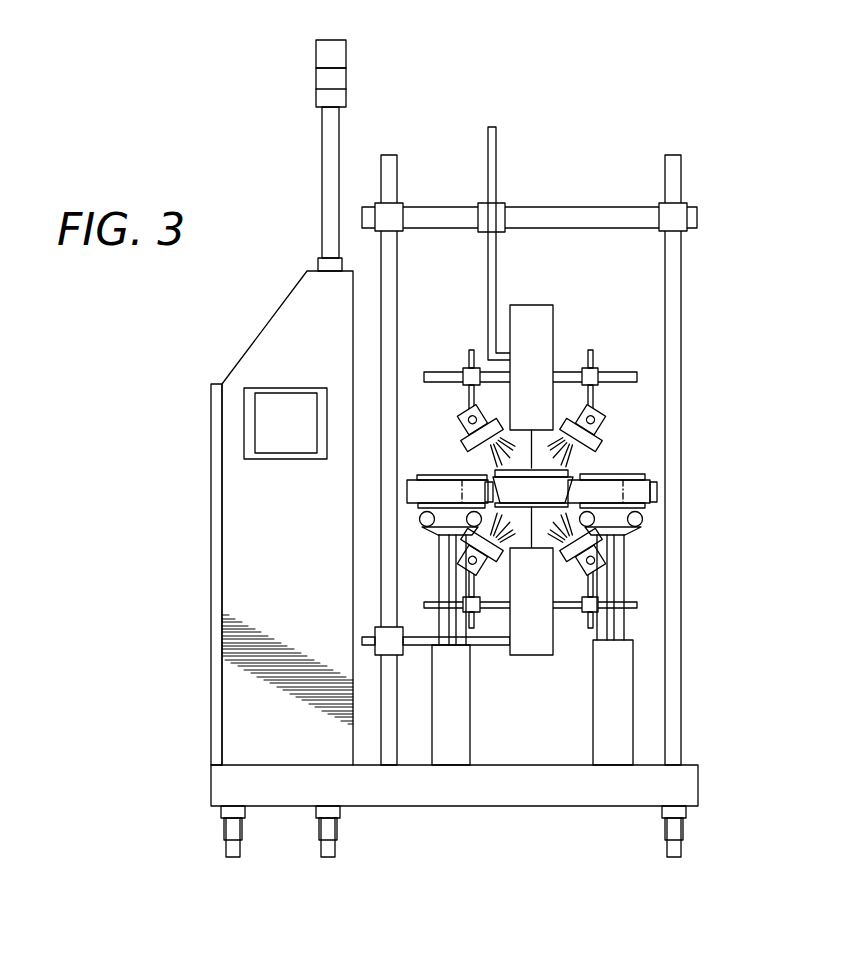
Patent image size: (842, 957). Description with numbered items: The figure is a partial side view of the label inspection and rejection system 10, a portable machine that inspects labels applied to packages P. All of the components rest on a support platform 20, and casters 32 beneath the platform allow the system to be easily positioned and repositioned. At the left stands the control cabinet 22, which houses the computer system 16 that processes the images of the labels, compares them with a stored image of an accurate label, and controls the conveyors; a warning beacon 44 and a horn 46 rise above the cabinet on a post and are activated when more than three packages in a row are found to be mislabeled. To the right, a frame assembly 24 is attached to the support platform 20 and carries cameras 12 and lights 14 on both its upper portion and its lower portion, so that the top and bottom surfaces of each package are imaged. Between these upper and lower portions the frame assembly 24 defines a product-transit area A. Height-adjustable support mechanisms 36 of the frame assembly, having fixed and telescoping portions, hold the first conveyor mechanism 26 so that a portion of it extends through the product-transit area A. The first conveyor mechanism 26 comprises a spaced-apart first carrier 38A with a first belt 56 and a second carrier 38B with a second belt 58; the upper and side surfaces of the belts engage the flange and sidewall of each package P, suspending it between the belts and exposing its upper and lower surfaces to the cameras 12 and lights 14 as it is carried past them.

The label inspection and rejection system 10 is at (290, 247).
The camera 12 is at (537, 332).
The light 14 is at (585, 440).
The computer system 16 is at (247, 350).
The support platform 20 is at (485, 805).
The control cabinet 22 is at (250, 517).
The frame assembly 24 is at (682, 652).
The first conveyor mechanism 26 is at (660, 492).
The caster 32 is at (230, 857).
The adjustable support mechanism 36 is at (465, 727).
The first carrier 38A is at (407, 488).
The second carrier 38B is at (652, 481).
The warning beacon 44 is at (338, 53).
The horn 46 is at (338, 73).
The first belt 56 is at (438, 488).
The second belt 58 is at (637, 497).
The product-transit area A is at (637, 443).
The package P is at (553, 507).